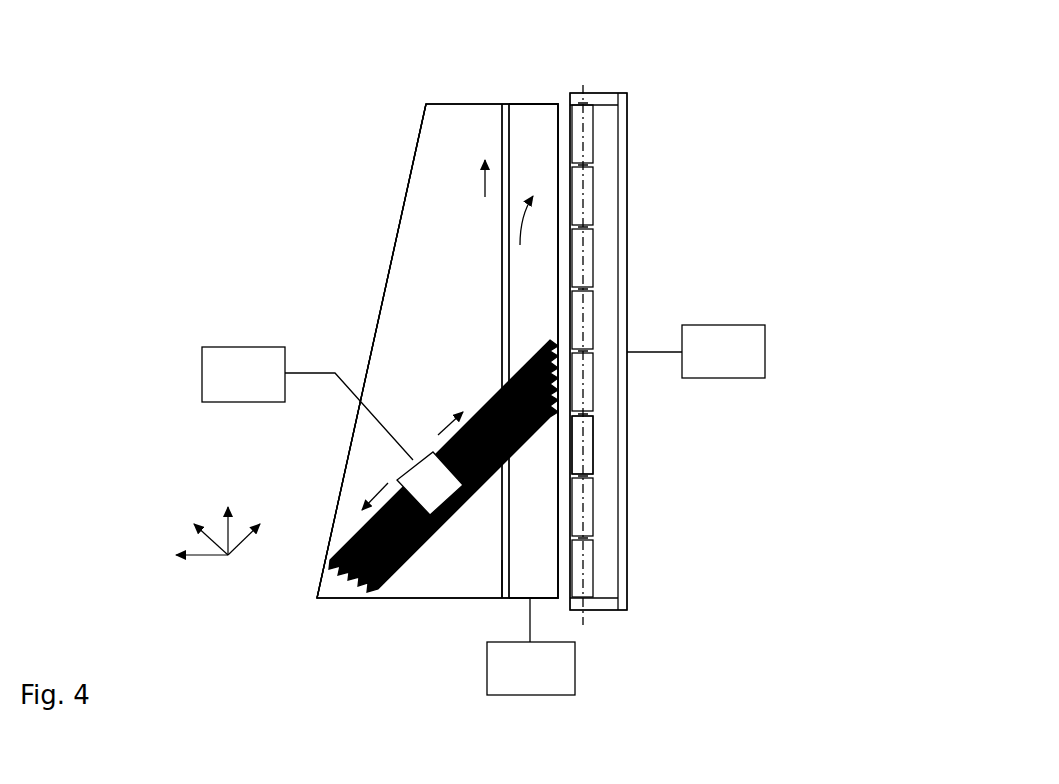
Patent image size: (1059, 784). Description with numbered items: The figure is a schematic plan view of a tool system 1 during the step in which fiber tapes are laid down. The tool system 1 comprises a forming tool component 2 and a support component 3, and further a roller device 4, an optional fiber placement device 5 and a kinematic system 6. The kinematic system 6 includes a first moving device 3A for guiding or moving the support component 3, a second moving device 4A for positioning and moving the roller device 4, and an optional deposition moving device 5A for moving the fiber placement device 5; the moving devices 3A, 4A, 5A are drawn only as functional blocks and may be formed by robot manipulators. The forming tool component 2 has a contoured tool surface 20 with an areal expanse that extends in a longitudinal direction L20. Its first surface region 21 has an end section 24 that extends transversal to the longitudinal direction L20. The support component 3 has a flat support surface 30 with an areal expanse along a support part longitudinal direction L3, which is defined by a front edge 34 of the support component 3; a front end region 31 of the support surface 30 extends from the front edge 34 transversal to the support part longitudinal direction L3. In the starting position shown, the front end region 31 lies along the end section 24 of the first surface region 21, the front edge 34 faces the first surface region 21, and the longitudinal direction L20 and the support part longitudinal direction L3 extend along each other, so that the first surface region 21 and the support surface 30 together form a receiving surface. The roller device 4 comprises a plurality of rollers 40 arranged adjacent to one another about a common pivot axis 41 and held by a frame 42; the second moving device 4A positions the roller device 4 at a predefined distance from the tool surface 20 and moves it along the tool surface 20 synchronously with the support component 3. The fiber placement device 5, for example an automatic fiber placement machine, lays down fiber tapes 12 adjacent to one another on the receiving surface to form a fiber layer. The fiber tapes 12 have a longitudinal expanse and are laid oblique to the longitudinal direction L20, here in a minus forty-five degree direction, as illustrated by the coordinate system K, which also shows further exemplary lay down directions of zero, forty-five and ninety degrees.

The tool system 1 is at (703, 100).
The forming tool component 2 is at (418, 598).
The support component 3 is at (541, 128).
The first moving device 3A is at (522, 698).
The roller device 4 is at (614, 621).
The second moving device 4A is at (722, 325).
The fiber placement device 5 is at (420, 448).
The deposition moving device 5A is at (213, 345).
The kinematic system 6 is at (505, 130).
The fiber tapes 12 is at (330, 553).
The contoured tool surface 20 is at (390, 327).
The first surface region 21 is at (408, 255).
The end section 24 is at (493, 320).
The support surface 30 is at (548, 112).
The front end region 31 is at (513, 160).
The front edge 34 is at (497, 570).
The rollers 40 is at (593, 140).
The common pivot axis 41 is at (588, 447).
The frame 42 is at (627, 573).
The coordinate system K is at (140, 470).
The longitudinal direction L20 is at (483, 181).
The support part longitudinal direction L3 is at (529, 234).